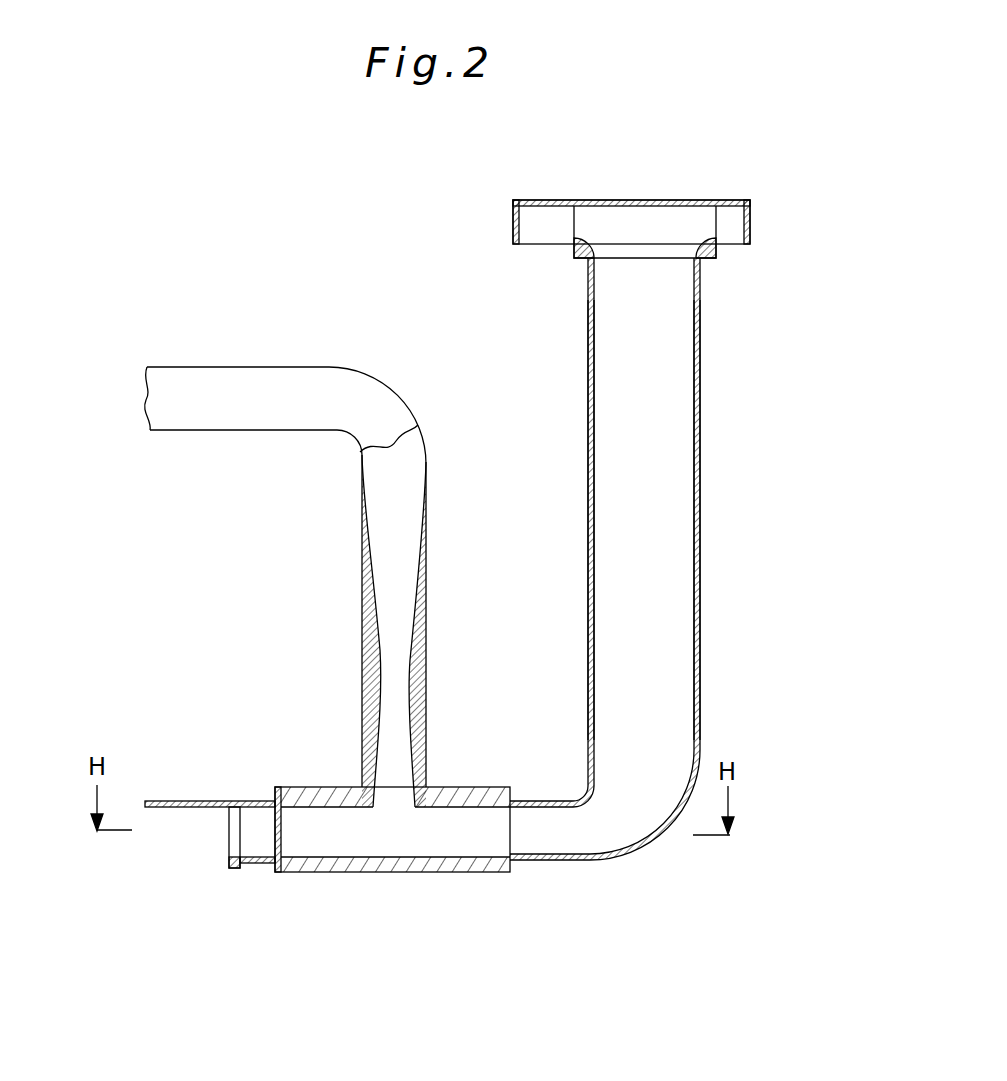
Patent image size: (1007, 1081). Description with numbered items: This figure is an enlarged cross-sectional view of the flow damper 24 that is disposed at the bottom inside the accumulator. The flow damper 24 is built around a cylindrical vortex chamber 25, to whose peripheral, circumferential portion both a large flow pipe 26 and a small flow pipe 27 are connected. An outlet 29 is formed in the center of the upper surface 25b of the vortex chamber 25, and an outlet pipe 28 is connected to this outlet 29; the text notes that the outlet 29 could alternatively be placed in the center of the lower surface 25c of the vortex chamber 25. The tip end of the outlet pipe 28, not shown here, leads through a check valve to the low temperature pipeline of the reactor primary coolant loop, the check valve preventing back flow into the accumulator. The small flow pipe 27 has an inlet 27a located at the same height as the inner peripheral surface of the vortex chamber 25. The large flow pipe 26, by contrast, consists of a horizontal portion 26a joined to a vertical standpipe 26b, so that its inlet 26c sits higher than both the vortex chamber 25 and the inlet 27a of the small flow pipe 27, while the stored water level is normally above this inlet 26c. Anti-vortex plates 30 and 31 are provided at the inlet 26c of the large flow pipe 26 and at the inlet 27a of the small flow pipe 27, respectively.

The flow damper 24 is at (328, 296).
The vortex chamber 25 is at (296, 787).
The upper surface of the vortex chamber 25b is at (342, 810).
The lower surface of the vortex chamber 25c is at (355, 850).
The large flow pipe 26 is at (568, 862).
The horizontal portion 26a is at (542, 800).
The standpipe 26b is at (700, 540).
The inlet of the large flow pipe 26c is at (650, 226).
The small flow pipe 27 is at (263, 868).
The inlet of the small flow pipe 27a is at (247, 832).
The outlet pipe 28 is at (358, 562).
The outlet 29 is at (430, 812).
The anti-vortex plate 30 is at (548, 200).
The anti-vortex plate 31 is at (192, 800).